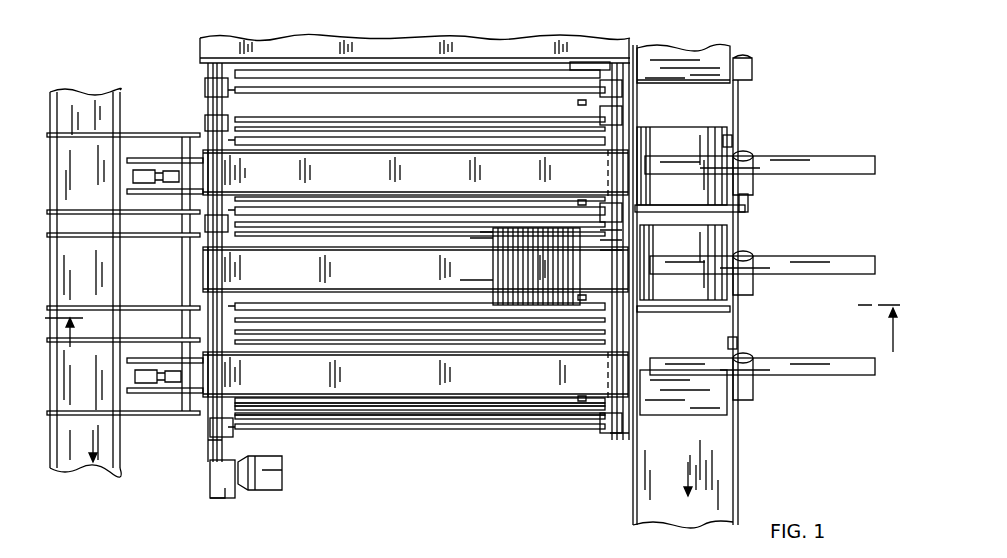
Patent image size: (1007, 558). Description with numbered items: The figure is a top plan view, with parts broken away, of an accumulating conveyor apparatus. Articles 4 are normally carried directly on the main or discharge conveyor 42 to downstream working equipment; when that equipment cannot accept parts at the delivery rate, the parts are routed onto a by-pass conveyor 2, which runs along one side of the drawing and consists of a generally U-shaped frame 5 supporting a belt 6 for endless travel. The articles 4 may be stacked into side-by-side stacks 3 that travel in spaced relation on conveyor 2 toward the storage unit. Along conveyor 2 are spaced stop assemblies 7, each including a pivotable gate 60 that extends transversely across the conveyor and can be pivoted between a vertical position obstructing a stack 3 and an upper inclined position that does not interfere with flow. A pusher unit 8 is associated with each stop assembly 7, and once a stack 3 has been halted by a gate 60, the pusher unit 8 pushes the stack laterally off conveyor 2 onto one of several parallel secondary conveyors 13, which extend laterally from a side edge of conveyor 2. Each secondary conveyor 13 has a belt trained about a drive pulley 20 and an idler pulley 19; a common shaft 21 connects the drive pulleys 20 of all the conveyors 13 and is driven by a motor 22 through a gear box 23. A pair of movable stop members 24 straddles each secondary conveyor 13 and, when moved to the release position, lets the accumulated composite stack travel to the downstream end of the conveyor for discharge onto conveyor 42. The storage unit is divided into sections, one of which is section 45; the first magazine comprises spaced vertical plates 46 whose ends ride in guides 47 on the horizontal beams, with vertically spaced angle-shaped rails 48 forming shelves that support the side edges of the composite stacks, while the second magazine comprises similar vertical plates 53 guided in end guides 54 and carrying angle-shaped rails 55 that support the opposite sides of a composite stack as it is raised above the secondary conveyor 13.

The by-pass conveyor 2 is at (780, 475).
The stacks 3 is at (522, 228).
The articles 4 is at (565, 280).
The U-shaped frame 5 is at (738, 446).
The belt 6 is at (730, 481).
The stop assemblies 7 is at (712, 52).
The pusher unit 8 is at (733, 134).
The secondary conveyors 13 is at (222, 42).
The idler pulley 19 is at (605, 156).
The drive pulley 20 is at (243, 168).
The common shaft 21 is at (208, 450).
The motor 22 is at (279, 482).
The gear box 23 is at (208, 486).
The movable stop members 24 is at (490, 238).
The main conveyor 42 is at (80, 480).
The storage section 45 is at (412, 436).
The vertical plates 46 is at (588, 66).
The guides 47 is at (210, 81).
The angle-shaped rails 48 is at (494, 70).
The vertical plates 53 is at (446, 422).
The end guides 54 is at (602, 108).
The angle-shaped rails 55 is at (327, 132).
The pivotable gate 60 is at (698, 60).